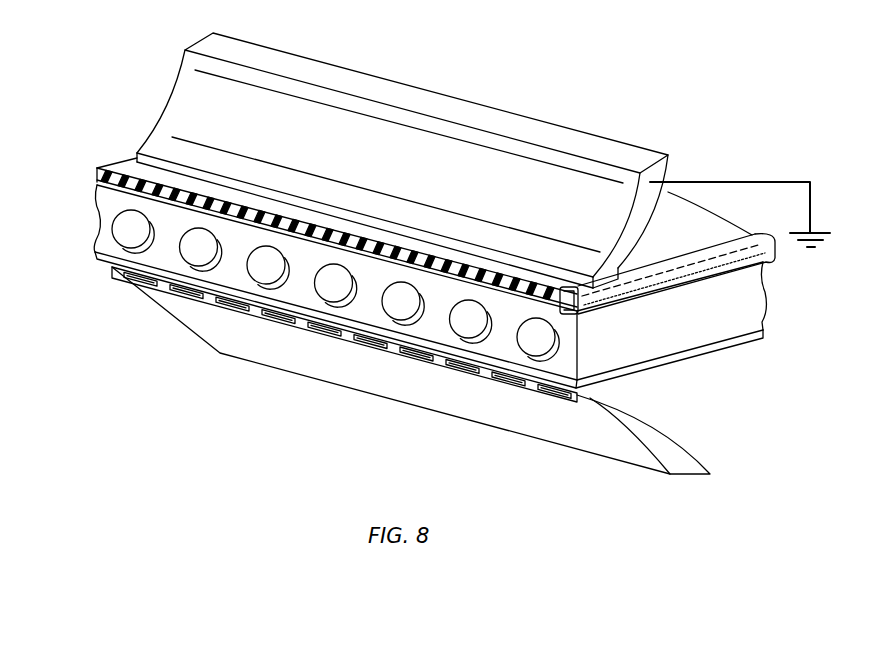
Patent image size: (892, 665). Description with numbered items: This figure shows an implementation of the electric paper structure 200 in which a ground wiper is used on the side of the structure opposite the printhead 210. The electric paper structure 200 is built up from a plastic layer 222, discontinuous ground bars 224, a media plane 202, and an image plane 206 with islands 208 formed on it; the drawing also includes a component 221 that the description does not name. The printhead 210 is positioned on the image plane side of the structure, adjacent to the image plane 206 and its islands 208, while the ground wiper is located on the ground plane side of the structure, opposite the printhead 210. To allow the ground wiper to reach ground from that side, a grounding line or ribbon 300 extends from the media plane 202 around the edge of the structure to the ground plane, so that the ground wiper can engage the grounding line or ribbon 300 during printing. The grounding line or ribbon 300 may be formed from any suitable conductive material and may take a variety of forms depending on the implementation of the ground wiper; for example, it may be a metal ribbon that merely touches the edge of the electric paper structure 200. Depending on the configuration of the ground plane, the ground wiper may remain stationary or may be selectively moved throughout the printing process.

The electric paper structure 200 is at (120, 127).
The media plane 202 is at (670, 332).
The image plane 206 is at (647, 363).
The islands 208 is at (289, 313).
The printhead 210 is at (352, 370).
The curved lens 221 is at (472, 110).
The plastic layer 222 is at (120, 165).
The discontinuous ground bars 224 is at (100, 180).
The grounding line or ribbon 300 is at (773, 255).